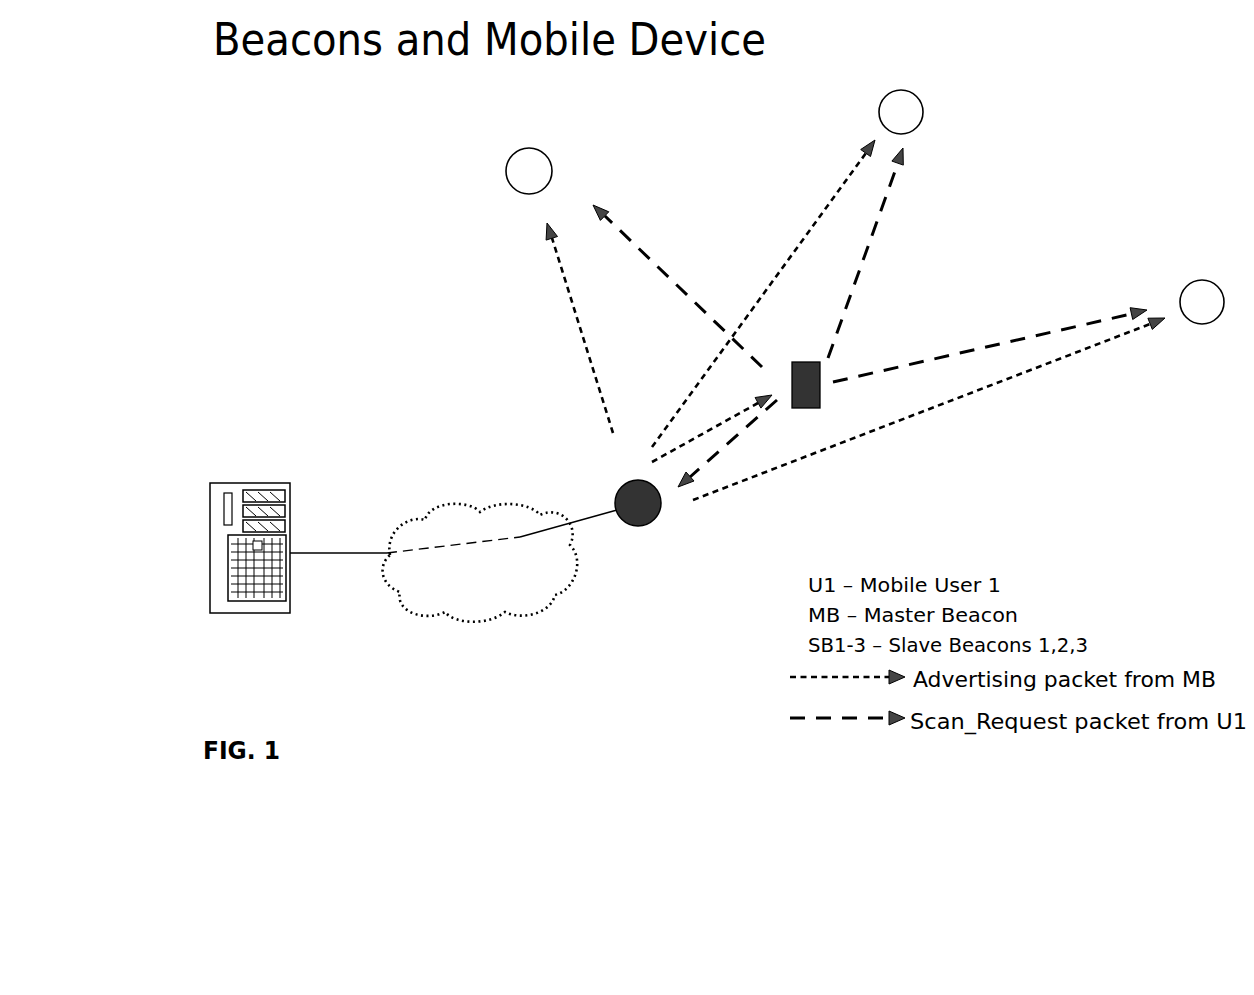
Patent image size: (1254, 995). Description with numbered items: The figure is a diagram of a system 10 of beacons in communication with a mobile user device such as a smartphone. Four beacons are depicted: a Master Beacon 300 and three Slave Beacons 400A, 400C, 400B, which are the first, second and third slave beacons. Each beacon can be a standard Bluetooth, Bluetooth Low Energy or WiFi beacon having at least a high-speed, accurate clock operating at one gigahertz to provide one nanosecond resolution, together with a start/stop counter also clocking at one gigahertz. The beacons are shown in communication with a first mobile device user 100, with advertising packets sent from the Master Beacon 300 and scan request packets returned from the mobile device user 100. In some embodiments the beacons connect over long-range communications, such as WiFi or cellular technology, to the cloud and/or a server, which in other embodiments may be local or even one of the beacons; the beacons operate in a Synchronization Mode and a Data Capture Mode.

The system 10 is at (1091, 158).
The first mobile device user 100 is at (822, 370).
The master beacon 300 is at (616, 497).
The slave beacon 400A is at (506, 171).
The slave beacon 400B is at (1185, 285).
The slave beacon 400C is at (880, 108).